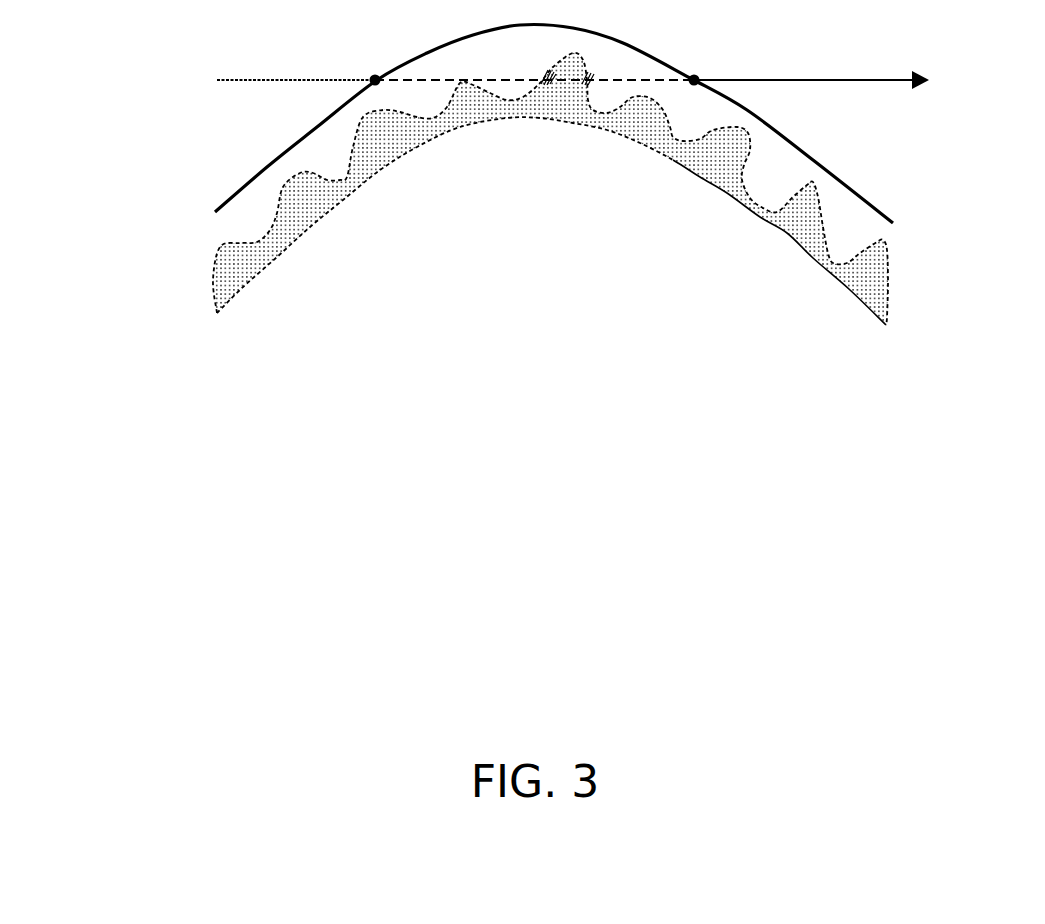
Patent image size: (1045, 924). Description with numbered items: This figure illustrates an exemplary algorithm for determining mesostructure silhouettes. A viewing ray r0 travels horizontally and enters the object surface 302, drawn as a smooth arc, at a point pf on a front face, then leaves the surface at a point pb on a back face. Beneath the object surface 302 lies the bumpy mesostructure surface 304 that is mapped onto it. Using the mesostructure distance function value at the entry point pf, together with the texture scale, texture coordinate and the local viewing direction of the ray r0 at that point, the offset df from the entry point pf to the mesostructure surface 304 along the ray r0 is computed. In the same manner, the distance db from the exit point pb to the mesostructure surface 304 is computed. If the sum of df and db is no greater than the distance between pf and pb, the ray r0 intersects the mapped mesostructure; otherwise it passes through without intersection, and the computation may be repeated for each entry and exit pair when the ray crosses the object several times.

The object surface 302 is at (208, 157).
The mesostructure surface 304 is at (713, 176).
The viewing ray r0 is at (572, 55).
The front-face entry point pf is at (367, 51).
The back-face exit point pb is at (717, 57).
The front offset distance df is at (506, 59).
The back offset distance db is at (614, 60).